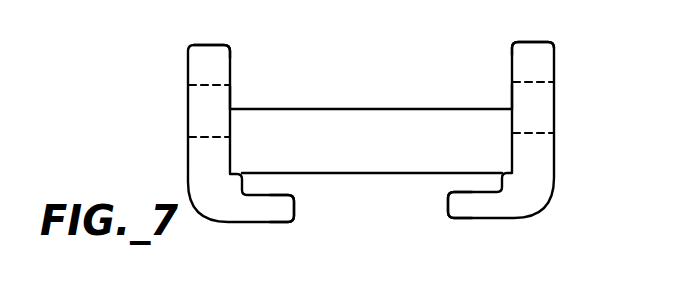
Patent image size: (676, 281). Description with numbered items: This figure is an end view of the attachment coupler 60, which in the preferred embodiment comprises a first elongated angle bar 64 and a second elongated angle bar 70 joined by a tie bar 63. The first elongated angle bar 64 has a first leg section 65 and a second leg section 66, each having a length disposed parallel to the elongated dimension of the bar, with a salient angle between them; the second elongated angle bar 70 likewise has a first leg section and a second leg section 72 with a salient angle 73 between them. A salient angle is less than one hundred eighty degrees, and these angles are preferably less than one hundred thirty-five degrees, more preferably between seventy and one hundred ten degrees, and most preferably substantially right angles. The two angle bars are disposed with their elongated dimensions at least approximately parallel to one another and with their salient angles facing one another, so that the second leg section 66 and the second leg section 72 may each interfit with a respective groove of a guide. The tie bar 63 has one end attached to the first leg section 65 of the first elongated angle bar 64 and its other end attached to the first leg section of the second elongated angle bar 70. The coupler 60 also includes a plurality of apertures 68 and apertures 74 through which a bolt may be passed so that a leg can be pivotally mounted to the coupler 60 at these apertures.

The attachment coupler 60 is at (160, 105).
The tie bar 63 is at (340, 108).
The first elongated angle bar 64 is at (230, 58).
The first leg section 65 is at (188, 166).
The second leg section 66 is at (295, 204).
The apertures 68 is at (231, 98).
The second elongated angle bar 70 is at (512, 53).
The second leg section 72 is at (449, 201).
The salient angle 73 is at (554, 152).
The apertures 74 is at (512, 97).